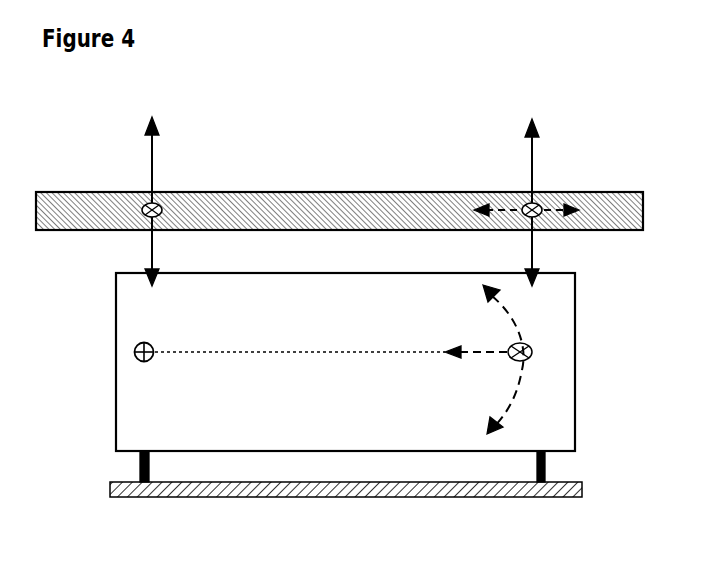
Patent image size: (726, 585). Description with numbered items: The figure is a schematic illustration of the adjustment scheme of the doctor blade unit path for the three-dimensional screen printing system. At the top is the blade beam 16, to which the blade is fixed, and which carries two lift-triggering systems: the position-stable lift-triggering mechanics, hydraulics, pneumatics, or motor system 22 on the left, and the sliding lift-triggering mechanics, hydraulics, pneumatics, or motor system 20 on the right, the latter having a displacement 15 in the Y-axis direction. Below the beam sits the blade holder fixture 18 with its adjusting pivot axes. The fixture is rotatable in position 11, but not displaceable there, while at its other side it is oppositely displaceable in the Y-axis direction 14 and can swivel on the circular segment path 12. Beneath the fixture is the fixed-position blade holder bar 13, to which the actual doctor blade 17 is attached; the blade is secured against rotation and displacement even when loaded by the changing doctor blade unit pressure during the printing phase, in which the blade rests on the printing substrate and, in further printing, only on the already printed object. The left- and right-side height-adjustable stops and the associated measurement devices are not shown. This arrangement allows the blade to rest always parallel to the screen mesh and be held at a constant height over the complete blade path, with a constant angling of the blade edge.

The rotatable position 11 is at (158, 360).
The circular segment path 12 is at (498, 405).
The fixed-position blade holder bar 13 is at (587, 485).
The Y-axis direction displacement 14 is at (475, 342).
The displacement in Y-axis direction 15 is at (553, 218).
The blade beam 16 is at (337, 208).
The doctor blade 17 is at (305, 489).
The blade holder fixture 18 is at (233, 418).
The sliding lift-triggering system 20 is at (543, 167).
The position-stable lift-triggering system 22 is at (162, 160).